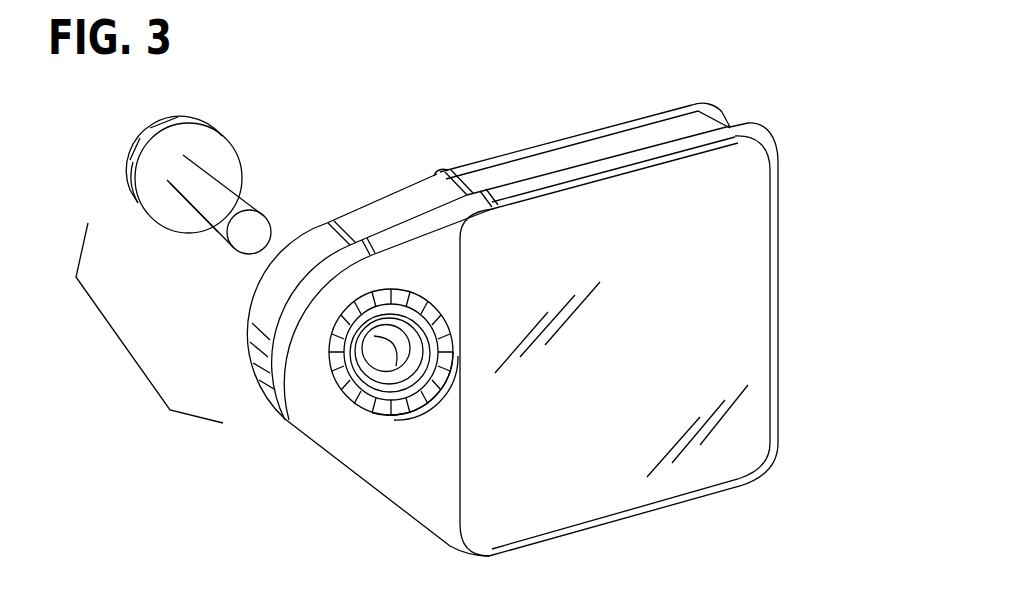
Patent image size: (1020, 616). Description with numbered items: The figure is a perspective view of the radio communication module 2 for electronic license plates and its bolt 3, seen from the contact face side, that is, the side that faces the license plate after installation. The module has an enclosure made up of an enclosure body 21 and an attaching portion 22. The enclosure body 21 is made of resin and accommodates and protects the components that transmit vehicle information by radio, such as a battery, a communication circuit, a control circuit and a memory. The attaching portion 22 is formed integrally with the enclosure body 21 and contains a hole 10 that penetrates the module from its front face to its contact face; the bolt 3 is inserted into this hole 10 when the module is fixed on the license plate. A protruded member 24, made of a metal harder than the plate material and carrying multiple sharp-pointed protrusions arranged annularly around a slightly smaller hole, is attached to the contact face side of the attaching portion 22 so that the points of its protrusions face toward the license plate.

The radio communication module for electronic license plates 2 is at (713, 80).
The bolt 3 is at (217, 135).
The hole 10 is at (352, 368).
The enclosure body 21 is at (616, 142).
The attaching portion 22 is at (312, 252).
The protruded member 24 is at (372, 413).